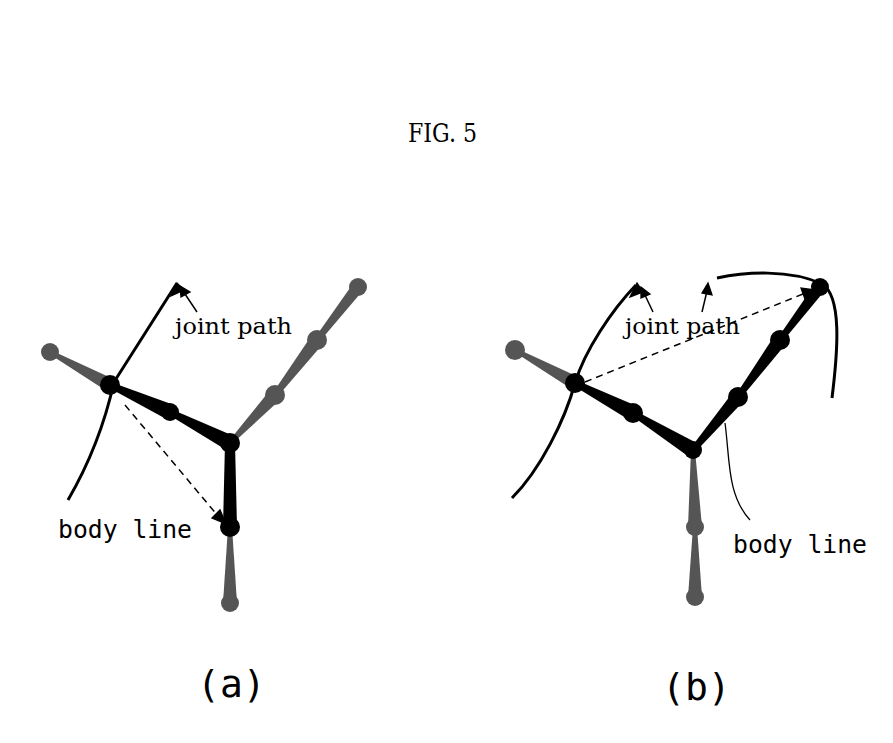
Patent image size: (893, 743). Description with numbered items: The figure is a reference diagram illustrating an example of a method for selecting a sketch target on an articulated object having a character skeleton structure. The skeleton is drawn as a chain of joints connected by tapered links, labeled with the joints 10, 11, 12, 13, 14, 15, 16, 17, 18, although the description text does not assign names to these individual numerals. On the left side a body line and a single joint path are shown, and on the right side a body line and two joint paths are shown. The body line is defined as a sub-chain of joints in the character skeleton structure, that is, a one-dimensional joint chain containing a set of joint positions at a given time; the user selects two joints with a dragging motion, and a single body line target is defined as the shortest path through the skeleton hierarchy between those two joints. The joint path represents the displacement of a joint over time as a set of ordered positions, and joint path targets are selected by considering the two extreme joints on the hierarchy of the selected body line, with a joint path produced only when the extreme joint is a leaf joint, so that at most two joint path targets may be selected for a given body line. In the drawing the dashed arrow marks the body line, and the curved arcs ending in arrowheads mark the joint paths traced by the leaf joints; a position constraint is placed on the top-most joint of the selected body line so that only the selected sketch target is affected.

The ankle joint 10 is at (238, 604).
The knee joint 11 is at (243, 530).
The pelvis joint 12 is at (243, 450).
The hip joint 13 is at (177, 409).
The knee joint 14 is at (108, 374).
The ankle joint 15 is at (52, 342).
The spine joint 16 is at (281, 403).
The neck joint 17 is at (316, 332).
The head joint 18 is at (367, 284).